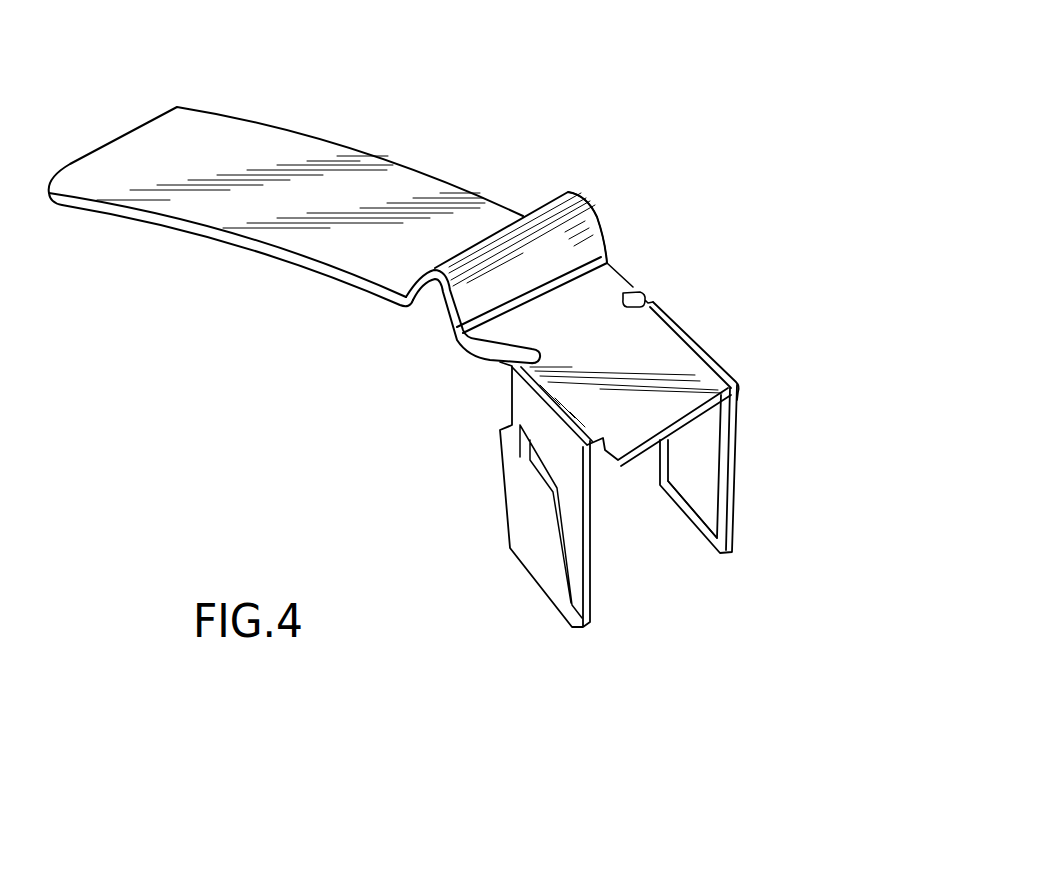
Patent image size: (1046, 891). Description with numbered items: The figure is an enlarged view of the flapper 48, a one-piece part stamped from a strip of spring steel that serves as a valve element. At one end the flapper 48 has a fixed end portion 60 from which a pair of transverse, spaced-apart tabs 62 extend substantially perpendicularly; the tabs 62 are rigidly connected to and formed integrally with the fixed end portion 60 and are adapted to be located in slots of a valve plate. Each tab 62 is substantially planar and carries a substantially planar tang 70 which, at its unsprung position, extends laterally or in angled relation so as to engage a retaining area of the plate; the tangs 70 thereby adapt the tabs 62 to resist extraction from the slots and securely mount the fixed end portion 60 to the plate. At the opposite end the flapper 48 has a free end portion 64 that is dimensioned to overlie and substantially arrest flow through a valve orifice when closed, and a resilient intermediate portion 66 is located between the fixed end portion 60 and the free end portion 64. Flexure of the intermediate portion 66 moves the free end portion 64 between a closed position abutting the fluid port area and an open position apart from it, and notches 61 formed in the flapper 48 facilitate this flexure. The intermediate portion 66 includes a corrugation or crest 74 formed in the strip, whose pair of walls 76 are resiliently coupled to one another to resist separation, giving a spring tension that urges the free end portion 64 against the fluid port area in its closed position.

The flapper 48 is at (156, 309).
The fixed end portion 60 is at (713, 308).
The notches 61 is at (648, 297).
The tabs 62 is at (728, 483).
The free end portion 64 is at (251, 98).
The intermediate portion 66 is at (596, 188).
The tangs 70 is at (525, 493).
The corrugation 74 is at (597, 219).
The walls 76 is at (420, 307).